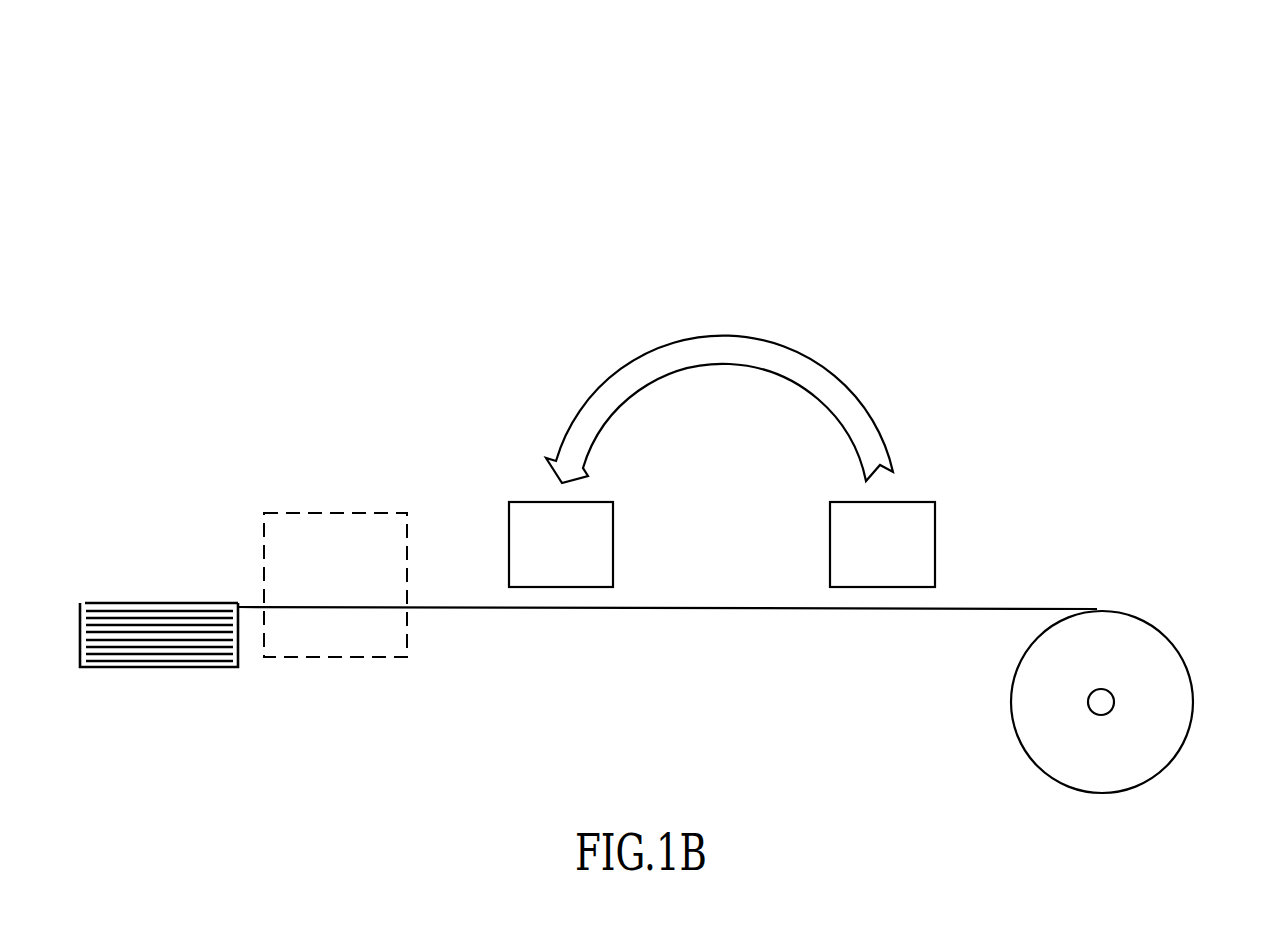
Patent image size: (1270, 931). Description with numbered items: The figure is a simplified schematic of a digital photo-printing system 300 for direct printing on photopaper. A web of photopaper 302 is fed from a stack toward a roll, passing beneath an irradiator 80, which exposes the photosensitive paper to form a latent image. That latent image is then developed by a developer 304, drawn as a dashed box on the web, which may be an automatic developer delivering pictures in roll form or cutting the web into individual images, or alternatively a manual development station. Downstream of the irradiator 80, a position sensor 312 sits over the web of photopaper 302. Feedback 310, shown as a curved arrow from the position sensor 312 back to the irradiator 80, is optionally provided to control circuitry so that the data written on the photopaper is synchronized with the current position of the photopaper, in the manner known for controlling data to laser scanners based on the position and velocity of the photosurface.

The system 300 is at (1083, 67).
The web of photopaper 302 is at (750, 610).
The developer 304 is at (360, 567).
The irradiator 80 is at (579, 557).
The position sensor 312 is at (907, 557).
The feedback 310 is at (787, 342).